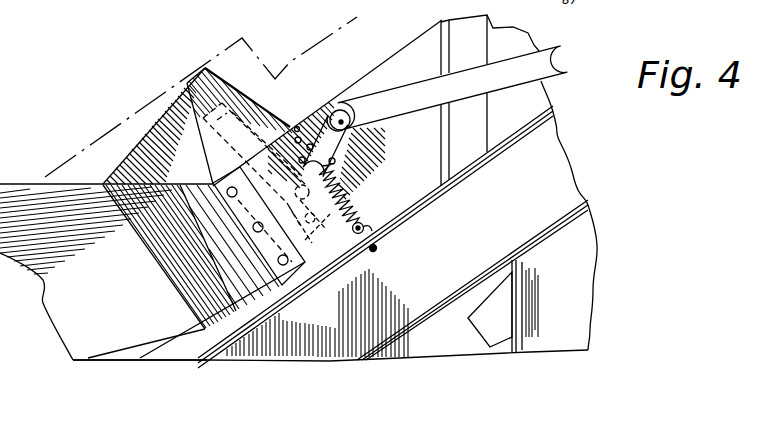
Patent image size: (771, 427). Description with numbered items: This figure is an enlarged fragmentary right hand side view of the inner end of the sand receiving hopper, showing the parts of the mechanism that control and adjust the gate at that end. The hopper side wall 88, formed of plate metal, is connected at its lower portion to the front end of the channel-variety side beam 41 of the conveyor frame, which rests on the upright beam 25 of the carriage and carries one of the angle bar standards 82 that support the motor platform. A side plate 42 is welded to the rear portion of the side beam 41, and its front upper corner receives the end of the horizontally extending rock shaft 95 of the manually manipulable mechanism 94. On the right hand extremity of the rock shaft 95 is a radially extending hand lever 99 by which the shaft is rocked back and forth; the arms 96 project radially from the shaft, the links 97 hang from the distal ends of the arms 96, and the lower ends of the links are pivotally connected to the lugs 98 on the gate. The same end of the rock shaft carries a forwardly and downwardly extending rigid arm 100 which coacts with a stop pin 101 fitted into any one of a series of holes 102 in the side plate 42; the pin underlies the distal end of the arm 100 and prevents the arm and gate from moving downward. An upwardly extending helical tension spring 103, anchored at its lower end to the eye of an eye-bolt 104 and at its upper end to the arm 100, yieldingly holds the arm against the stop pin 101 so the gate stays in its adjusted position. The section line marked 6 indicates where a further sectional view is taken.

The section line 6- 6 is at (62, 174).
The upright beams 25 is at (567, 305).
The side beams 41 is at (556, 162).
The side plates 42 is at (407, 62).
The standards 82 is at (470, 43).
The side walls 88 is at (53, 303).
The manually manipulable mechanism 94 is at (371, 90).
The rock shaft 95 is at (362, 134).
The arms 96 is at (238, 211).
The links 97 is at (256, 252).
The lugs 98 is at (270, 272).
The hand lever 99 is at (565, 47).
The rigid arm 100 is at (337, 106).
The stop pin 101 is at (335, 161).
The holes 102 is at (308, 143).
The helical tension spring 103 is at (355, 194).
The eye-bolt 104 is at (368, 229).